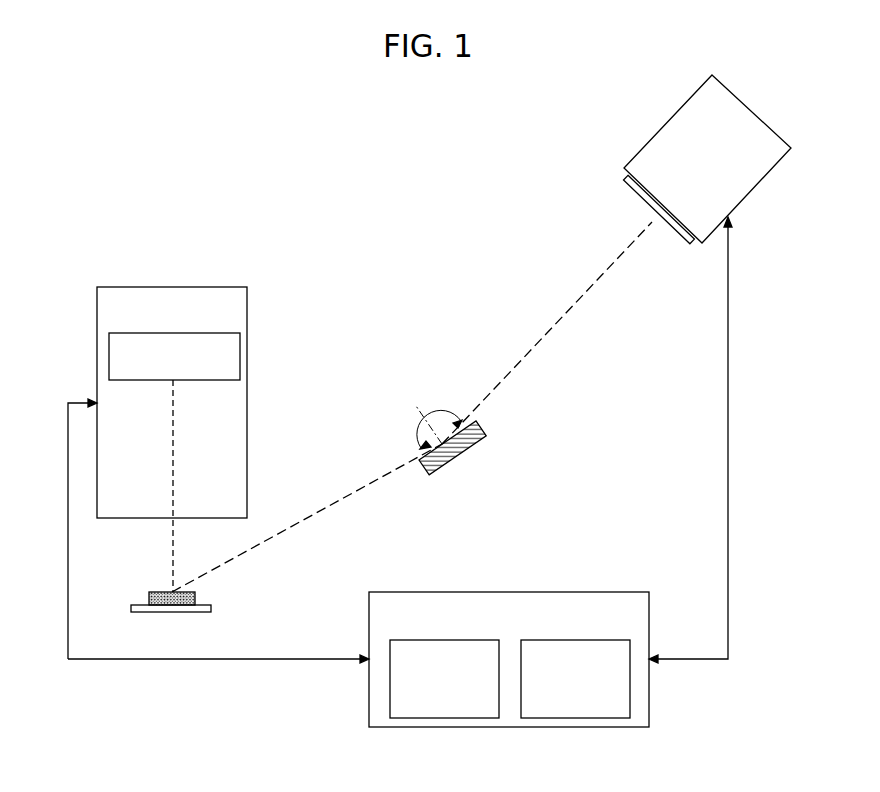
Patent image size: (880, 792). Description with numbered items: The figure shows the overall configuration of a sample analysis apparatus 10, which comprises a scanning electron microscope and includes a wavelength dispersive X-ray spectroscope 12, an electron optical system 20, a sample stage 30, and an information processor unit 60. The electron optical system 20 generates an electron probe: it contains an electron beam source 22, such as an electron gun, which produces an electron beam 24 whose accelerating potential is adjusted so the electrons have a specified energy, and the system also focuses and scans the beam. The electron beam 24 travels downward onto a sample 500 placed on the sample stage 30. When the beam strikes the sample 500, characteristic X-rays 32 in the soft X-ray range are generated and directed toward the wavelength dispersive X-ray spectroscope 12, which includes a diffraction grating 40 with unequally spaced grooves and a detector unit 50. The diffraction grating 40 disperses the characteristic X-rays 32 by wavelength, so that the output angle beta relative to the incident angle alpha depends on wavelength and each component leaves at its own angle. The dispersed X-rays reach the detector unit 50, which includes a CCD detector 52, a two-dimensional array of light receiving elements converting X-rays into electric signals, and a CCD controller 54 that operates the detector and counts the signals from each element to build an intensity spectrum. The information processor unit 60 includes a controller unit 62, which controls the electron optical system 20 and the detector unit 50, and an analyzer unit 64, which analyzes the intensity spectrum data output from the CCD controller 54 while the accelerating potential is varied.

The sample analysis apparatus 10 is at (203, 145).
The wavelength dispersive X-ray spectroscope 12 is at (428, 230).
The electron optical system 20 is at (170, 287).
The electron beam source 22 is at (109, 352).
The electron beam 24 is at (172, 407).
The sample stage 30 is at (131, 605).
The characteristic X-rays 32 is at (372, 480).
The diffraction grating 40 is at (489, 429).
The detector unit 50 is at (772, 184).
The CCD detector 52 is at (625, 181).
The CCD controller 54 is at (637, 153).
The information processor unit 60 is at (563, 592).
The controller unit 62 is at (444, 679).
The analyzer unit 64 is at (575, 679).
The sample 500 is at (151, 592).